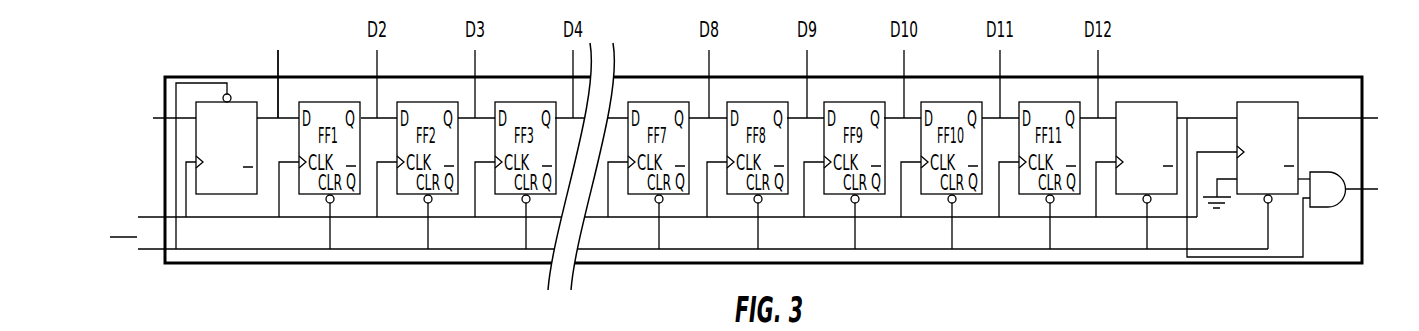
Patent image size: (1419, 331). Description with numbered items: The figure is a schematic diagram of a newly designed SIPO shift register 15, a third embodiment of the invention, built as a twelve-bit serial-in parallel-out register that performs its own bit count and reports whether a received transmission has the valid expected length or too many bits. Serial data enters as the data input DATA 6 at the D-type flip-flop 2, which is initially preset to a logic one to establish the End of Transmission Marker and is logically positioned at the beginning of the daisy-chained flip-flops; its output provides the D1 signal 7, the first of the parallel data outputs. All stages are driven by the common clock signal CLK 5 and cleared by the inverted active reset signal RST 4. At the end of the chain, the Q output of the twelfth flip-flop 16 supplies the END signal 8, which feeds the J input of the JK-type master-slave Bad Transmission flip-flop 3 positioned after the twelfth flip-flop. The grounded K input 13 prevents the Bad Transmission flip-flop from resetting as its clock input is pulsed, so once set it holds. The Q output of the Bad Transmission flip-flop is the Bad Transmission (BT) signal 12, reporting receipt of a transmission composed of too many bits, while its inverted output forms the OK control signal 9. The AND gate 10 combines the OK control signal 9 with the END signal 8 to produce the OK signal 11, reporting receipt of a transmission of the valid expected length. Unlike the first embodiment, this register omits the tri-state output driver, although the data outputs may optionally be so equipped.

The D-type flip-flop FF0 2 is at (216, 143).
The Bad Transmission flip-flop FFBT 3 is at (1247, 143).
The inverted active reset signal RST 4 is at (689, 271).
The clock signal CLK 5 is at (653, 200).
The data input DATA 6 is at (153, 135).
The D1 signal 7 is at (259, 65).
The END signal 8 is at (1240, 146).
The OK control signal 9 is at (1324, 147).
The AND gate G1 10 is at (1311, 233).
The OK signal 11 is at (1377, 169).
The Bad Transmission (BT) signal 12 is at (1351, 86).
The FFBT K input 13 is at (1220, 142).
The SIPO shift register 15 is at (763, 140).
The flip-flop FF12 16 is at (1136, 148).